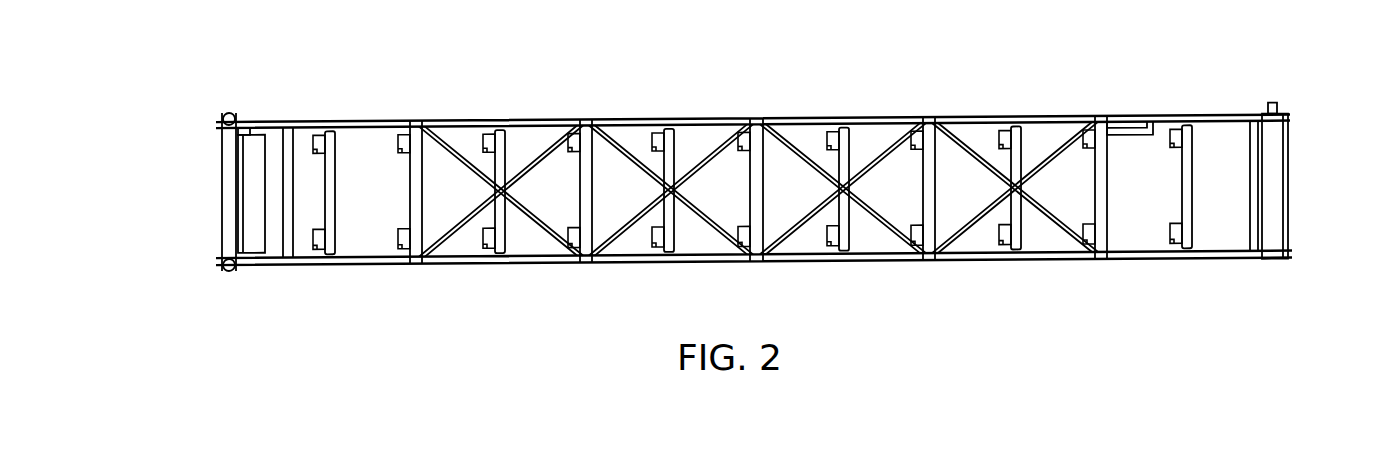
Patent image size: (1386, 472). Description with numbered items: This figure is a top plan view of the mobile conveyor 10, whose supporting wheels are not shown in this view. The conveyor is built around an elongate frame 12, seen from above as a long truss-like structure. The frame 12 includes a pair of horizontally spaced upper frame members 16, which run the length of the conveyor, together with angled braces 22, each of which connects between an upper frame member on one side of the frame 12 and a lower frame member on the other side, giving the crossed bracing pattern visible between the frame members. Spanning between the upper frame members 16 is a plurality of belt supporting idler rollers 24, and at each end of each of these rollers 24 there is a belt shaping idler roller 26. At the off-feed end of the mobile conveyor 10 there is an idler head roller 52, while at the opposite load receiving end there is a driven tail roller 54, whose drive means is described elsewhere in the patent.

The mobile conveyor 10 is at (1143, 84).
The elongate frame 12 is at (552, 114).
The upper frame members 16 is at (362, 121).
The angled braces 22 is at (775, 135).
The belt supporting idler rollers 24 is at (495, 162).
The belt shaping idler roller 26 is at (916, 140).
The idler head roller 52 is at (1288, 157).
The driven tail roller 54 is at (222, 208).